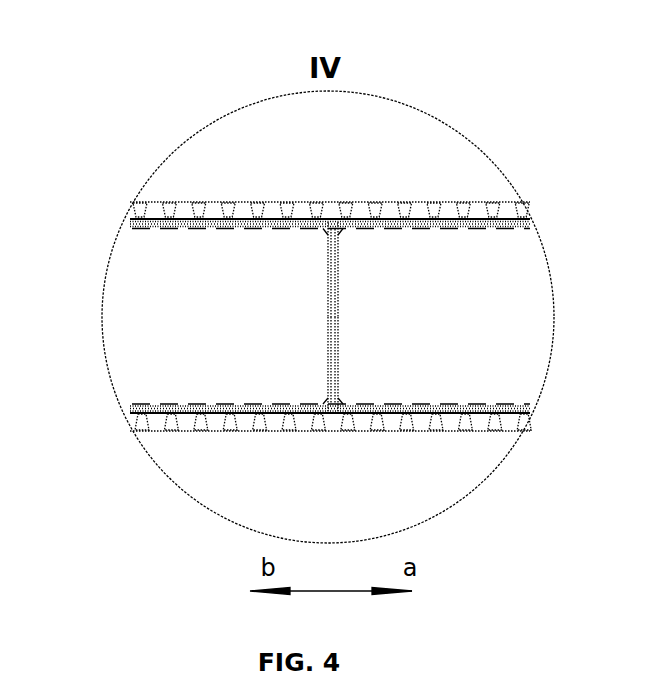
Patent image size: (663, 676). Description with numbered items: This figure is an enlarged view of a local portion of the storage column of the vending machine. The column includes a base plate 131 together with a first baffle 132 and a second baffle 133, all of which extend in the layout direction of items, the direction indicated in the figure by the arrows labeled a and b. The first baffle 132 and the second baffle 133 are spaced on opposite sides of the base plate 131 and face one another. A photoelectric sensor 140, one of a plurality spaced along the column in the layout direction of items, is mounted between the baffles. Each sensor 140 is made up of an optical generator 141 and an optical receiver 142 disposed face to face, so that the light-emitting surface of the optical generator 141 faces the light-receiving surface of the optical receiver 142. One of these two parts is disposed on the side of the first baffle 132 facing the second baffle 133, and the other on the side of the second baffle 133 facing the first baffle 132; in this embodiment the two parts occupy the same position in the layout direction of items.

The base plate 131 is at (131, 273).
The first baffle 132 is at (213, 431).
The second baffle 133 is at (223, 201).
The photoelectric sensor 140 is at (250, 316).
The optical generator 141 is at (302, 405).
The optical receiver 142 is at (303, 229).